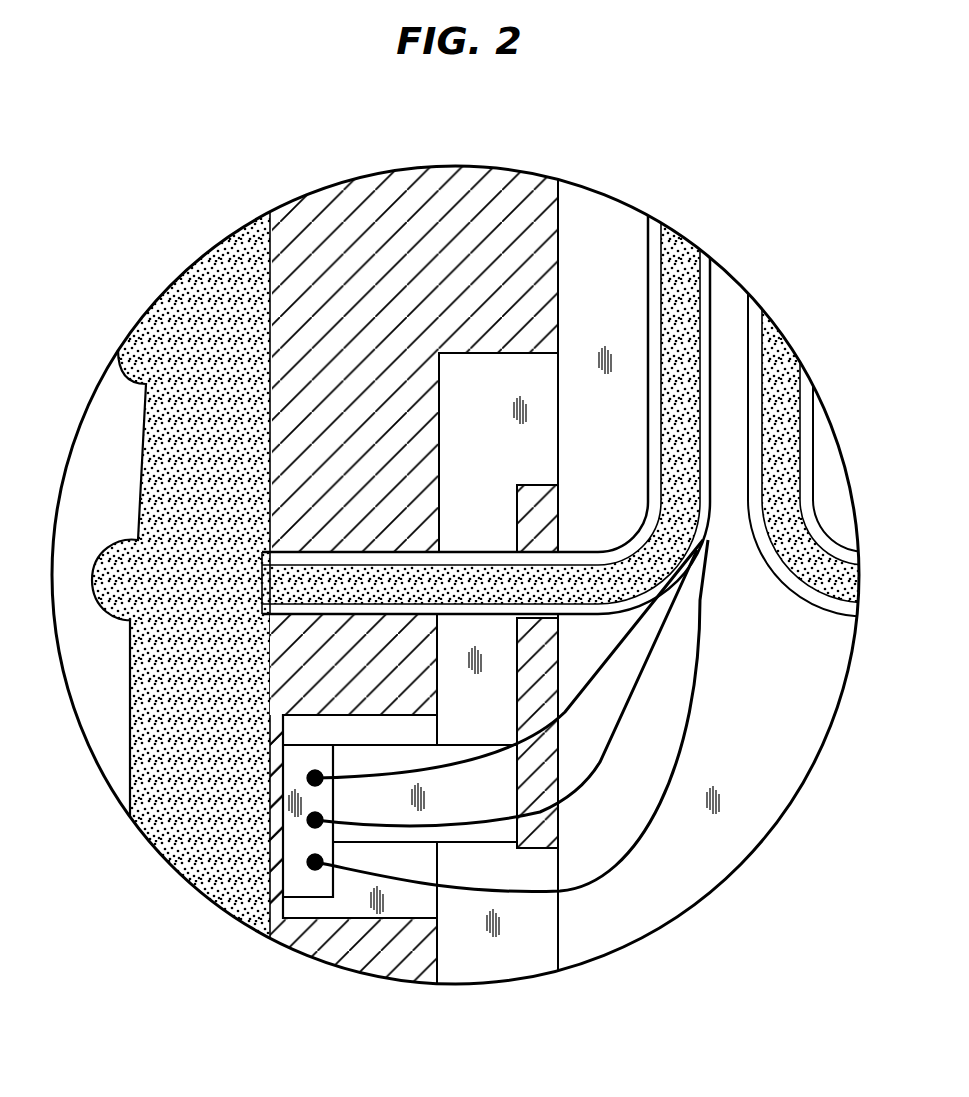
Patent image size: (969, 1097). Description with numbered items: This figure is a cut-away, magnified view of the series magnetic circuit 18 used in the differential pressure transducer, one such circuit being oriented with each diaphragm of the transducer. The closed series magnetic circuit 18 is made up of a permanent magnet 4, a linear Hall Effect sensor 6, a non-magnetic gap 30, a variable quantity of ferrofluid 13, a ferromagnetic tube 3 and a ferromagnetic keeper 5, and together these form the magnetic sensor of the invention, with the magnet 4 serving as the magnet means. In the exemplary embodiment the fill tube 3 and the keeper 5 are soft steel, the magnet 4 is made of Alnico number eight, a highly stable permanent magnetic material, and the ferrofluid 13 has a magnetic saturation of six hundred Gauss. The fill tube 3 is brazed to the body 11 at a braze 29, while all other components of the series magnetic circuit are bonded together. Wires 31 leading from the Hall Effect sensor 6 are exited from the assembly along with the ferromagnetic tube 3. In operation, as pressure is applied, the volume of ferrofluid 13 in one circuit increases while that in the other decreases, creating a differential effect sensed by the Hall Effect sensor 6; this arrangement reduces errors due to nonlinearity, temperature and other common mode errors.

The ferromagnetic tube 3 is at (375, 550).
The permanent magnet 4 is at (457, 845).
The ferromagnetic keeper 5 is at (560, 717).
The linear Hall Effect sensor 6 is at (290, 863).
The body 11 is at (392, 965).
The ferrofluid 13 is at (152, 484).
The series magnetic circuit 18 is at (816, 358).
The braze 29 is at (445, 548).
The non-magnetic gap 30 is at (270, 805).
The wires 31 is at (697, 640).